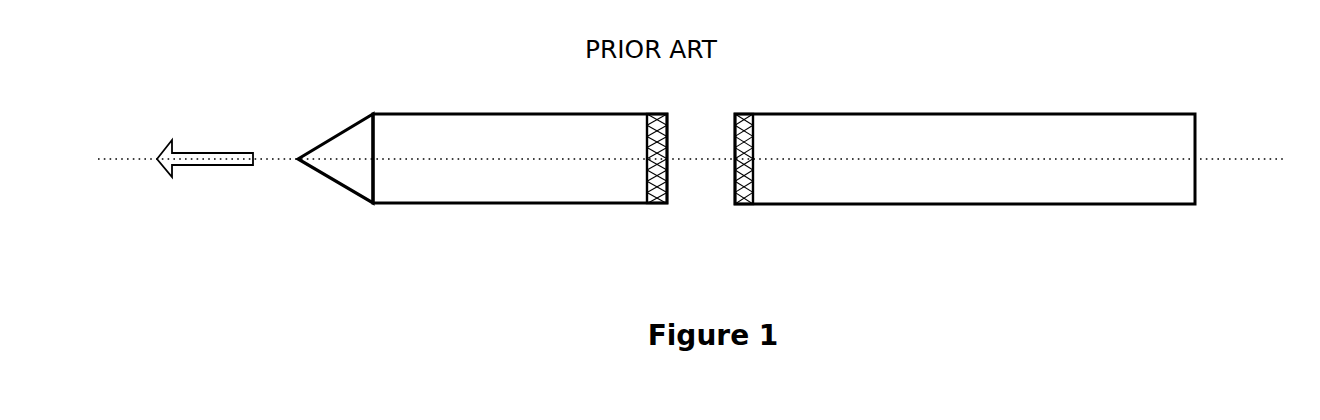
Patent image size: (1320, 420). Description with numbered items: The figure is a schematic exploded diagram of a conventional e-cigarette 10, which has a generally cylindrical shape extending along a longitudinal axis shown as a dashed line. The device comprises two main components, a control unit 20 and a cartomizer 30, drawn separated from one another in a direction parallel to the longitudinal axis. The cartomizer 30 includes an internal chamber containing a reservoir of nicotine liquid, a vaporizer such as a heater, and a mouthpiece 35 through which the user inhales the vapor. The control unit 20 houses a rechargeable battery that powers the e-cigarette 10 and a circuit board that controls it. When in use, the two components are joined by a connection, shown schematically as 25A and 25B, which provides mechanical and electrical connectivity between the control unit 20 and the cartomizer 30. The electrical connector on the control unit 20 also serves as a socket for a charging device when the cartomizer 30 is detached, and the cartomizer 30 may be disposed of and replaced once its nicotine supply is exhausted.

The e-cigarette 10 is at (691, 183).
The control unit 20 is at (991, 194).
The connection 25A is at (608, 194).
The connection 25B is at (940, 115).
The cartomizer 30 is at (520, 129).
The mouthpiece 35 is at (291, 123).